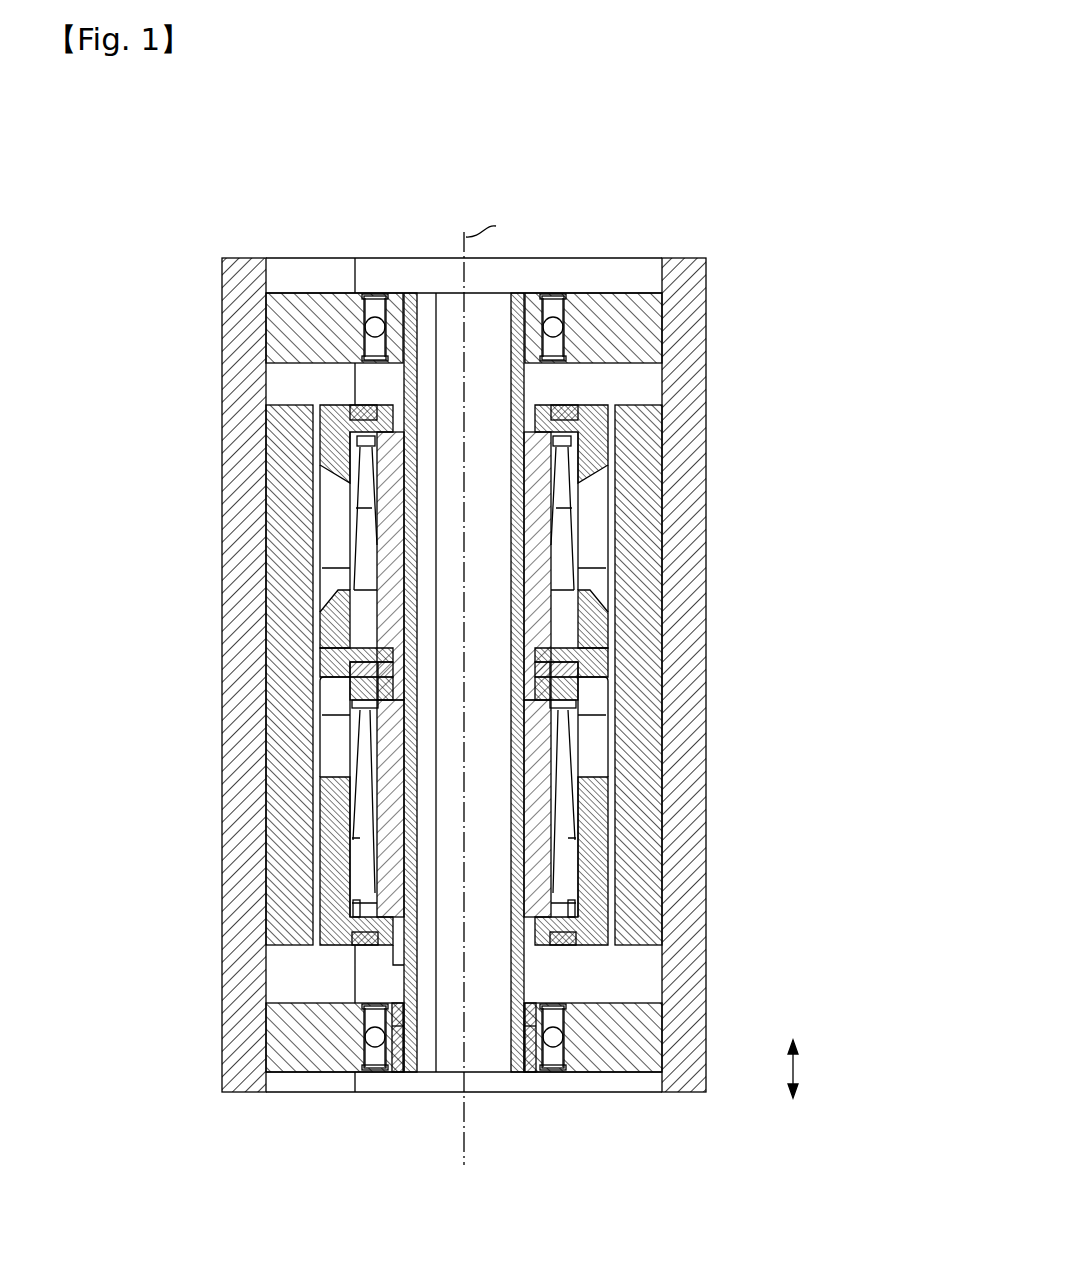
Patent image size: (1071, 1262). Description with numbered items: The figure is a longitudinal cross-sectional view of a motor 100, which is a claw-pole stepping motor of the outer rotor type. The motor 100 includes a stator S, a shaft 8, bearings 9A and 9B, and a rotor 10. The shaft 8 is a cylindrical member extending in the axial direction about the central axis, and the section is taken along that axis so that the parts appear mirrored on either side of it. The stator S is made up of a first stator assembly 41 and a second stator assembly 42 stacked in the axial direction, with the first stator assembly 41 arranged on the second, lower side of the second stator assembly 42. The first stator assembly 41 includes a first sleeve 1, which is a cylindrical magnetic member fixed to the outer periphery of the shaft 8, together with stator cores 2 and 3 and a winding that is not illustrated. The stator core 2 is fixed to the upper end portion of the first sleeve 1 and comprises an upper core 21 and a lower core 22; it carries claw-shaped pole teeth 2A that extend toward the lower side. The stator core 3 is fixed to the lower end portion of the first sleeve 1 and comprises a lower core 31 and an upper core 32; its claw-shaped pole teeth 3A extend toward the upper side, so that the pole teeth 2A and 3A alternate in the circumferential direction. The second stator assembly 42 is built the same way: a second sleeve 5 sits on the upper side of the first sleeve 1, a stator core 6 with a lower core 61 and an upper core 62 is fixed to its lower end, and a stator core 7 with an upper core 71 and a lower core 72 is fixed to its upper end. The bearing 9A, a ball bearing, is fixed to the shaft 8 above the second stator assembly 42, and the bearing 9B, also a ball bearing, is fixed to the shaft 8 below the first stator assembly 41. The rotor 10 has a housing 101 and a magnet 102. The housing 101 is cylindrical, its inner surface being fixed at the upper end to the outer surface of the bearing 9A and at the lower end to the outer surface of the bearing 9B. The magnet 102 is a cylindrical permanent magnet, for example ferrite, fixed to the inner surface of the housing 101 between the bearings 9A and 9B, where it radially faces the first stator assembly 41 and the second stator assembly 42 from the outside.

The motor 100 is at (612, 147).
The rotor 10 is at (100, 480).
The housing 101 is at (237, 478).
The magnet 102 is at (280, 530).
The shaft 8 is at (407, 305).
The bearing 9A is at (617, 300).
The bearing 9B is at (593, 1057).
The stator S is at (884, 737).
The second stator assembly 42 is at (818, 428).
The first stator assembly 41 is at (828, 910).
The stator core 7 is at (768, 403).
The upper core 71 is at (578, 422).
The lower core 72 is at (595, 470).
The second sleeve 5 is at (545, 540).
The stator core 6 is at (773, 583).
The lower core 61 is at (590, 668).
The upper core 62 is at (585, 642).
The stator core 2 is at (778, 690).
The upper core 21 is at (585, 686).
The lower core 22 is at (585, 700).
The pole teeth 2A is at (340, 740).
The first sleeve 1 is at (545, 808).
The stator core 3 is at (783, 890).
The lower core 31 is at (578, 937).
The upper core 32 is at (590, 893).
The pole teeth 3A is at (335, 806).